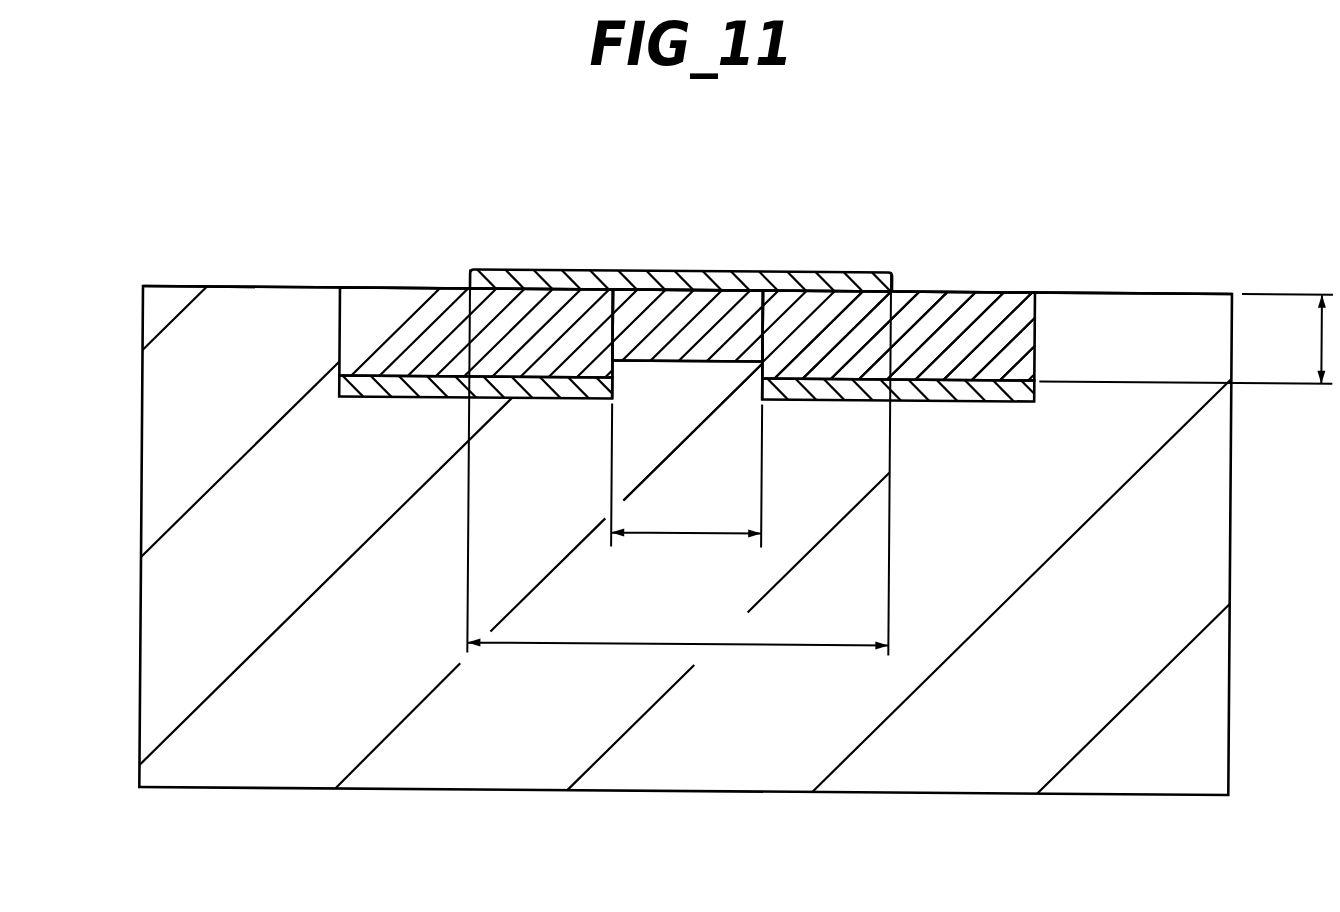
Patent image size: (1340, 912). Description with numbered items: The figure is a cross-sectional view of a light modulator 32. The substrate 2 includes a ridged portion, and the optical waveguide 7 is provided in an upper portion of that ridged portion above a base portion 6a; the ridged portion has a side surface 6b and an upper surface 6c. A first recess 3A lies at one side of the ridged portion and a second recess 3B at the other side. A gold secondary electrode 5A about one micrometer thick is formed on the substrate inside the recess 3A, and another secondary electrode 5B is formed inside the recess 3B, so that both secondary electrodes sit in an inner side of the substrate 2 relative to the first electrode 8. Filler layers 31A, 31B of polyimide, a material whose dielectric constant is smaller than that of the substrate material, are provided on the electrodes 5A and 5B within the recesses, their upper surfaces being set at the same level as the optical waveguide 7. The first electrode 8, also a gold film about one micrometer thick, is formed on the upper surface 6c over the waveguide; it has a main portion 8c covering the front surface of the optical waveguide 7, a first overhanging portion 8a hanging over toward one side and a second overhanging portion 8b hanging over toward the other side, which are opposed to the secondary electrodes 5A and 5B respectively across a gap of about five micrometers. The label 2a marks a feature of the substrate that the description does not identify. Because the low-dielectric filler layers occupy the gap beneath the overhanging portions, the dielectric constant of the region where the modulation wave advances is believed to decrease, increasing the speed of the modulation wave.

The substrate 2 is at (1176, 527).
The substrate surface 2a is at (1123, 286).
The first recess 3A is at (565, 280).
The second recess 3B is at (960, 282).
The filler layer 31A is at (402, 317).
The filler layer 31B is at (942, 315).
The secondary electrode 5A is at (388, 383).
The secondary electrode 5B is at (993, 392).
The base portion 6a is at (708, 370).
The side surface 6b is at (588, 332).
The upper surface 6c is at (687, 280).
The optical waveguide 7 is at (643, 317).
The first electrode 8 is at (668, 227).
The first overhanging portion 8a is at (527, 280).
The second overhanging portion 8b is at (848, 276).
The main portion 8c is at (725, 275).
The light modulator 32 is at (739, 469).